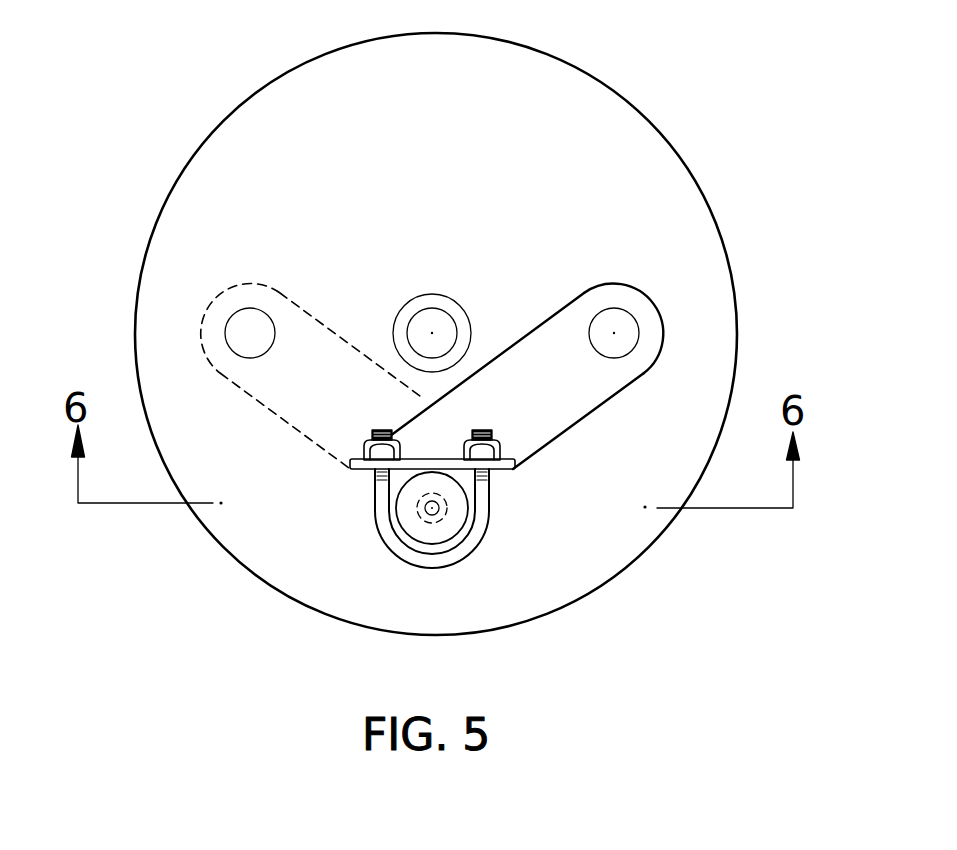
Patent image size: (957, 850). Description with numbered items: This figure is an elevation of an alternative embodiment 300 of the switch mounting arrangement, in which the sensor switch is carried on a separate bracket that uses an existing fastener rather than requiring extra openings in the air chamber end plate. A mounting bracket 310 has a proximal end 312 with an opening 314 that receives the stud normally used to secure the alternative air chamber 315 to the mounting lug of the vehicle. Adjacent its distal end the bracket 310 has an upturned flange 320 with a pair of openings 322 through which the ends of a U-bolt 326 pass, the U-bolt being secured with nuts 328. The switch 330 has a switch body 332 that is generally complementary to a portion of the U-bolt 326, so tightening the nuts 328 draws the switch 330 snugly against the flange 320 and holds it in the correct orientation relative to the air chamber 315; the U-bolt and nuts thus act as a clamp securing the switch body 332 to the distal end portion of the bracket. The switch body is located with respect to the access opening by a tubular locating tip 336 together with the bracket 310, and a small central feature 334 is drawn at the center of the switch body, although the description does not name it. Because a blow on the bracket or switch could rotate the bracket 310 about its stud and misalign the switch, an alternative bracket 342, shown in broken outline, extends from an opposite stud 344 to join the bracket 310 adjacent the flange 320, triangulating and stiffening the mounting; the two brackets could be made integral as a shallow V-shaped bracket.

The alternative embodiment 300 is at (727, 92).
The mounting bracket 310 is at (613, 323).
The proximal end 312 is at (655, 314).
The opening 314 is at (607, 328).
The air chamber 315 is at (575, 92).
The upturned flange 320 is at (352, 466).
The openings 322 is at (348, 461).
The U-bolt 326 is at (385, 546).
The nuts 328 is at (366, 452).
The switch 330 is at (452, 525).
The switch body 332 is at (432, 511).
The center pin 334 is at (433, 518).
The tubular locating tip 336 is at (447, 505).
The alternative bracket 342 is at (228, 376).
The opposite stud 344 is at (240, 328).